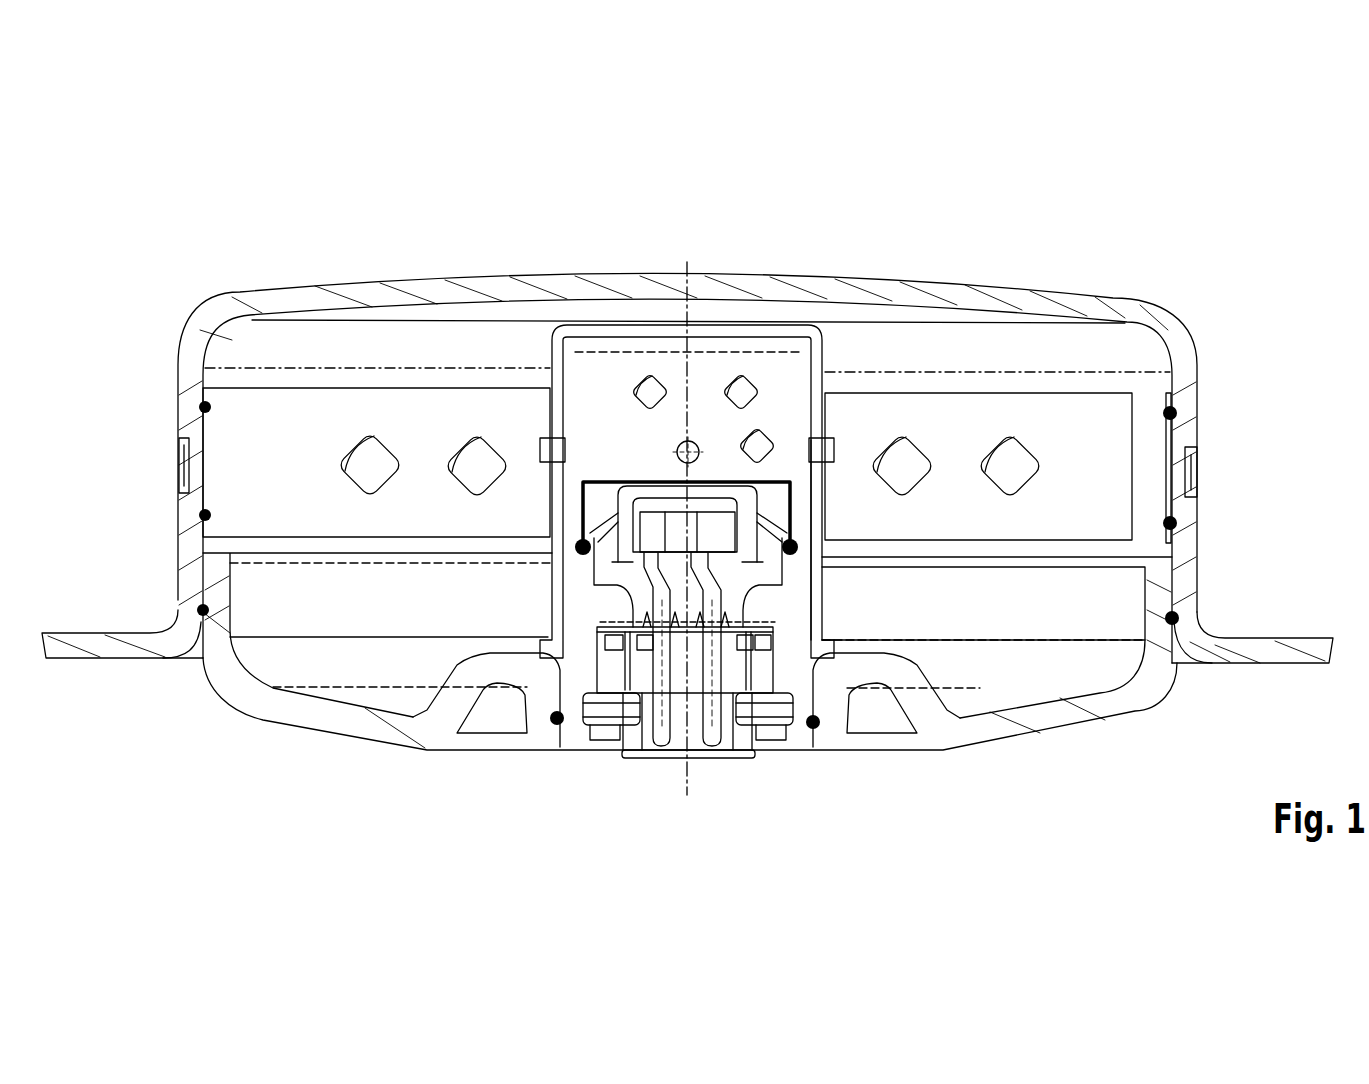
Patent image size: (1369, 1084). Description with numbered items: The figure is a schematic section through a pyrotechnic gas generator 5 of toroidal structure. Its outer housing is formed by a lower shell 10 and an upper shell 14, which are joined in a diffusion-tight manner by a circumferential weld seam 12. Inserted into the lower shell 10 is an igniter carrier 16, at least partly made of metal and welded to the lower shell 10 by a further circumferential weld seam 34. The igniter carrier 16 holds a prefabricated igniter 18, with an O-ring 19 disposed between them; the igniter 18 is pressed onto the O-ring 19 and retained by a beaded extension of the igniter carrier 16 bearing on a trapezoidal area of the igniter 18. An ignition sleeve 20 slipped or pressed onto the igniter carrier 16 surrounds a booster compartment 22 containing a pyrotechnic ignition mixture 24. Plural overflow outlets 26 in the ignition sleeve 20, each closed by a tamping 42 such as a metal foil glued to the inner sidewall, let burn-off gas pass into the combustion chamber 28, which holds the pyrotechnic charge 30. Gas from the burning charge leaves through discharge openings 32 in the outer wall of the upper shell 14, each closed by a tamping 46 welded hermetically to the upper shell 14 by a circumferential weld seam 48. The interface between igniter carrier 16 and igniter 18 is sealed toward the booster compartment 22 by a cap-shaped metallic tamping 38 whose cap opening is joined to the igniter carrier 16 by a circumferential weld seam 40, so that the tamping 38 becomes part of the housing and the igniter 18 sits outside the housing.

The gas generator 5 is at (446, 212).
The lower shell 10 is at (1075, 718).
The circumferential weld seam 12 is at (1175, 617).
The upper shell 14 is at (1030, 300).
The igniter carrier 16 is at (573, 676).
The igniter 18 is at (735, 573).
The O-ring 19 is at (795, 603).
The ignition sleeve 20 is at (557, 327).
The booster compartment 22 is at (645, 363).
The pyrotechnic ignition mixture 24 is at (733, 377).
The overflow outlets 26 is at (543, 450).
The combustion chamber 28 is at (271, 423).
The pyrotechnic charge 30 is at (353, 450).
The discharge openings 32 is at (179, 485).
The circumferential weld seam 34 is at (815, 735).
The tamping 38 is at (787, 472).
The circumferential weld seam 40 is at (794, 547).
The tamping 42 is at (565, 460).
The tamping 46 is at (1167, 447).
The circumferential weld seam 48 is at (1174, 414).